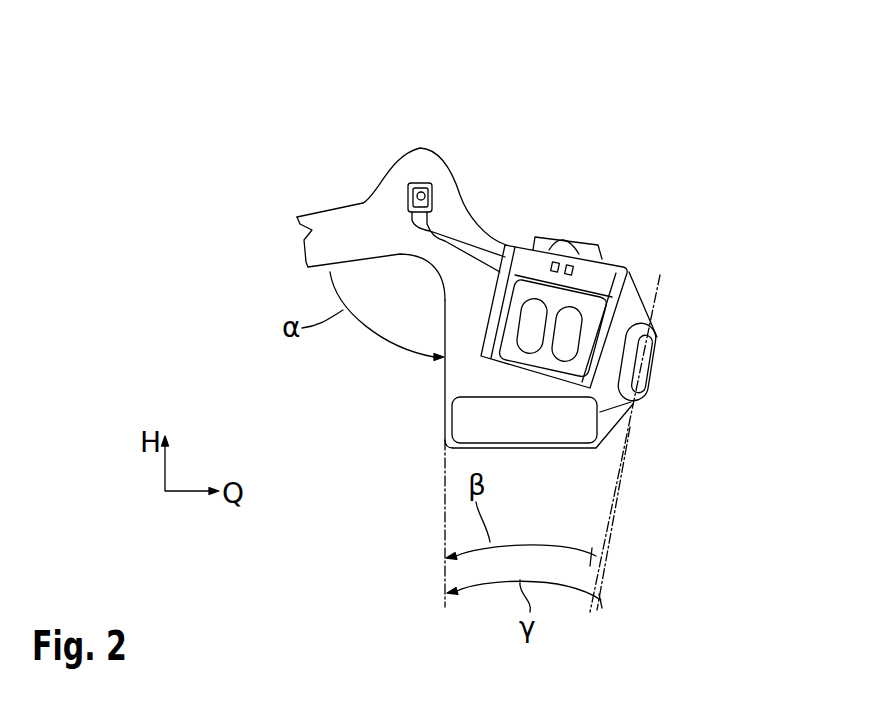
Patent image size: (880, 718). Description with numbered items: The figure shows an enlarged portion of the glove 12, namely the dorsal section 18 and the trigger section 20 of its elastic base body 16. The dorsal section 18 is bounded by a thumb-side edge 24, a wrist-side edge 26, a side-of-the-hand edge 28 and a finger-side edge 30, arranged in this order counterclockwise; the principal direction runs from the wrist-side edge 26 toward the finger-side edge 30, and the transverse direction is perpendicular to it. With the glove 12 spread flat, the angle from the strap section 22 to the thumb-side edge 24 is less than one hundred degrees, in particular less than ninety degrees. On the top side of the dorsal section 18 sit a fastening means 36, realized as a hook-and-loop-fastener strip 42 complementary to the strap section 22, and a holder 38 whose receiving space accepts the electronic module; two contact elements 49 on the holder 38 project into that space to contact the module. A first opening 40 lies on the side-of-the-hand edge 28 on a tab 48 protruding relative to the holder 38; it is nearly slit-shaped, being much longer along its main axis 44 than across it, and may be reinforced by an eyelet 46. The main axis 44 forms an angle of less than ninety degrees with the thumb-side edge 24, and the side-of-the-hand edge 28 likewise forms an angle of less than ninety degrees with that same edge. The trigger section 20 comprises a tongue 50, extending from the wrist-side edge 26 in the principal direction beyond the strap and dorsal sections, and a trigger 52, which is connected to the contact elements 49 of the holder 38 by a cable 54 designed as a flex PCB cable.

The glove 12 is at (291, 142).
The base body 16 is at (368, 220).
The dorsal section 18 is at (636, 282).
The trigger section 20 is at (398, 165).
The strap section 22 is at (297, 234).
The thumb-side edge 24 is at (434, 383).
The wrist-side edge 26 is at (535, 465).
The side-of-the-hand edge 28 is at (674, 372).
The finger-side edge 30 is at (616, 241).
The fastening means 36 is at (459, 433).
The holder 38 is at (529, 254).
The first opening 40 is at (651, 343).
The hook-and-loop-fastener strip 42 is at (462, 427).
The main axis 44 is at (661, 283).
The eyelet 46 is at (650, 390).
The tab 48 is at (612, 418).
The contact elements 49 is at (552, 252).
The tongue 50 is at (438, 168).
The trigger 52 is at (418, 182).
The cable 54 is at (460, 242).